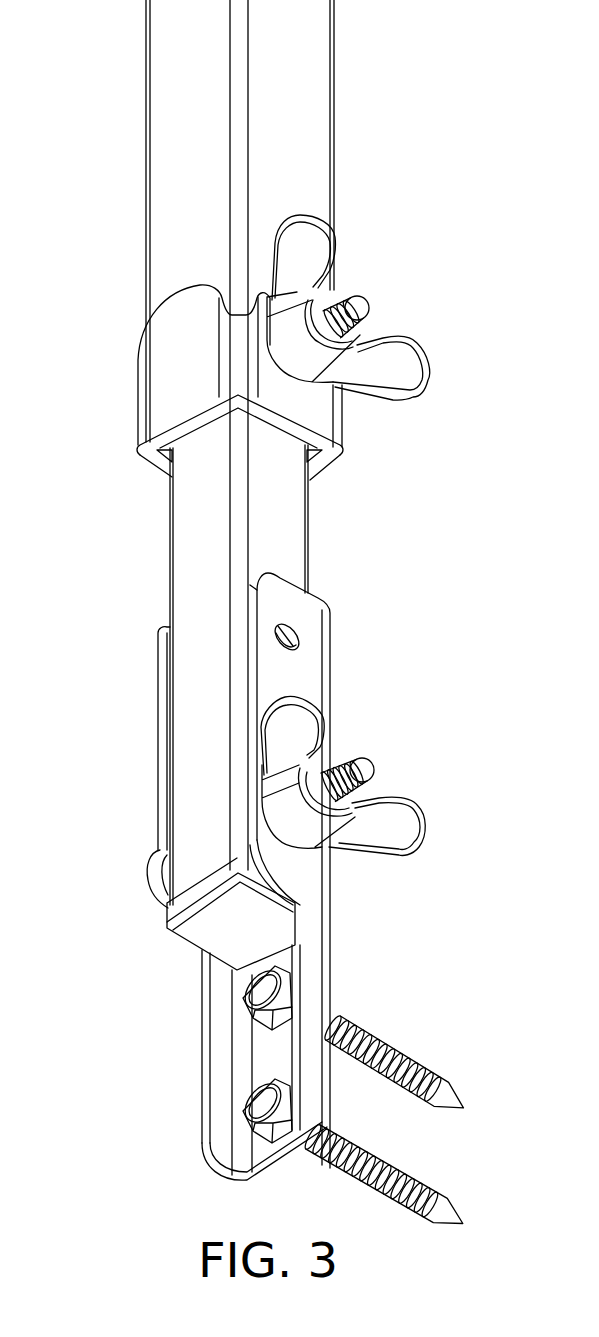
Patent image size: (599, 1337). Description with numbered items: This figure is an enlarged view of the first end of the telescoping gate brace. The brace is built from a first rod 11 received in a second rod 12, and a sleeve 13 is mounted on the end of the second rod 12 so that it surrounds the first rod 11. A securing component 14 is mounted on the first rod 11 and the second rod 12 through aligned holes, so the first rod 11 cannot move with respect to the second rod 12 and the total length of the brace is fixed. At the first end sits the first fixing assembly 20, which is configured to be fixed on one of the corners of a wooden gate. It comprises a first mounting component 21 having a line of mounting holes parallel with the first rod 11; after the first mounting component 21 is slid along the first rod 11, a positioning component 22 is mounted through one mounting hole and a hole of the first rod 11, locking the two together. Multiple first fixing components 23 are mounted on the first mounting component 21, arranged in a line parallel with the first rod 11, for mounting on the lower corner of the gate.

The first rod 11 is at (193, 518).
The second rod 12 is at (163, 115).
The sleeve 13 is at (147, 360).
The securing component 14 is at (333, 291).
The first fixing assembly 20 is at (378, 700).
The first mounting component 21 is at (237, 1010).
The positioning component 22 is at (327, 753).
The first fixing components 23 is at (392, 1048).